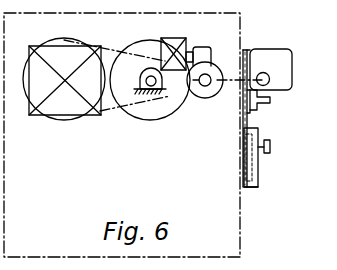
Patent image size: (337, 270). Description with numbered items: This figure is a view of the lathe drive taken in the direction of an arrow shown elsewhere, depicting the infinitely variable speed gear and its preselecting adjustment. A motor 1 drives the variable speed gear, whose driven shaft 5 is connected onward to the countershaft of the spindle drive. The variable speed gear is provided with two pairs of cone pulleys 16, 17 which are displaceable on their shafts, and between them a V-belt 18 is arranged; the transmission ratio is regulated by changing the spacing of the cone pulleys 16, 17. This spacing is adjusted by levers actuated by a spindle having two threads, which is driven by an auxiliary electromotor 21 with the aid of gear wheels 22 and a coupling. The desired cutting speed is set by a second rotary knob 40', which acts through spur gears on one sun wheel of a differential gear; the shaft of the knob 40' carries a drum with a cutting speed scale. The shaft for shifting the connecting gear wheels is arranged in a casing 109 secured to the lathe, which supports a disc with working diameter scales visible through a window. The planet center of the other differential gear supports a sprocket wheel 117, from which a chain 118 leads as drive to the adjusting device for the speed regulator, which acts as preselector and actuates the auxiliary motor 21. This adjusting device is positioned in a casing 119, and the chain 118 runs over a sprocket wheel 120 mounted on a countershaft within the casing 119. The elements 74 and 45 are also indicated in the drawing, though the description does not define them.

The motor 1 is at (58, 103).
The cone pulleys 16 is at (70, 42).
The V-belt 18 is at (114, 46).
The cone pulleys 17 is at (138, 113).
The driven shaft 5 is at (153, 86).
The electromotor 21 is at (177, 43).
The gear wheels 22 is at (208, 63).
The chain 118 is at (243, 123).
The sprocket wheel 120 is at (246, 50).
The casing 119 is at (280, 89).
The casing 109 is at (253, 108).
The sprocket wheel 117 is at (244, 170).
The insert 74 is at (258, 167).
The second rotary knob 40' is at (282, 145).
The base 45 is at (252, 186).